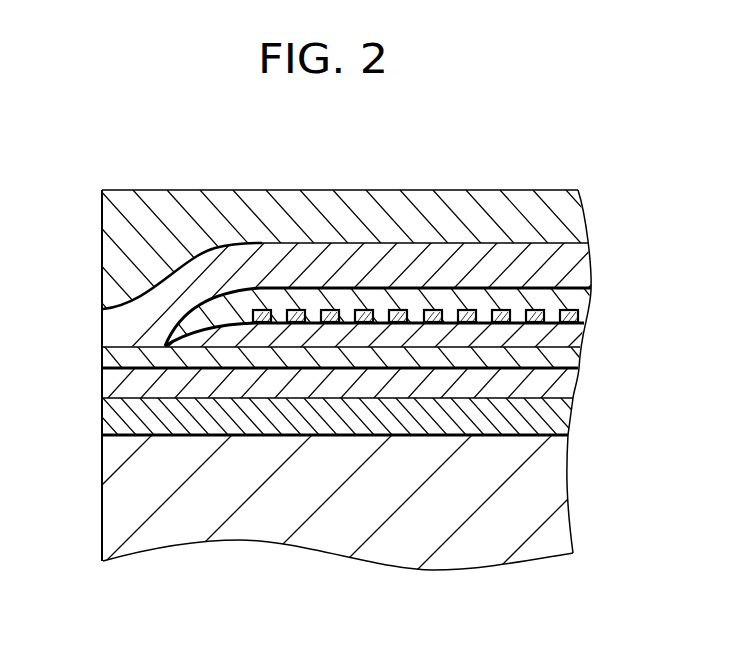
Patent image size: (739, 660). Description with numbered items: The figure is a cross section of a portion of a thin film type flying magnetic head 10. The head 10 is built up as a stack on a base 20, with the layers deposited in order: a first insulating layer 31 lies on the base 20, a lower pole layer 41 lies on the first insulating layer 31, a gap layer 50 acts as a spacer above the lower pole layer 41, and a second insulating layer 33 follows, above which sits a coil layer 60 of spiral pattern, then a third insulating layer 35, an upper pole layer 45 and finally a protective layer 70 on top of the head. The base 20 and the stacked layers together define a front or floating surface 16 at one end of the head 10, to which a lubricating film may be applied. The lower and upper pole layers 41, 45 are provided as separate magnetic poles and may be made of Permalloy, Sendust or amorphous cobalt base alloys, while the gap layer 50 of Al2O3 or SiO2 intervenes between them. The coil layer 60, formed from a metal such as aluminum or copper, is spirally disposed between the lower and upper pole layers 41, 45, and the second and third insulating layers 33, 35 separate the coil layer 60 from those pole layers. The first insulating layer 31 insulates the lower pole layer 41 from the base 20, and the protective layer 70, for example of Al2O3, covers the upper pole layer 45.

The flying magnetic head 10 is at (171, 578).
The front or floating surface 16 is at (102, 463).
The base 20 is at (468, 558).
The first insulating layer 31 is at (562, 420).
The second insulating layer 33 is at (576, 338).
The third insulating layer 35 is at (580, 298).
The lower pole layer 41 is at (568, 382).
The upper pole layer 45 is at (575, 262).
The gap layer 50 is at (117, 357).
The coil layer 60 is at (258, 308).
The protective layer 70 is at (522, 203).